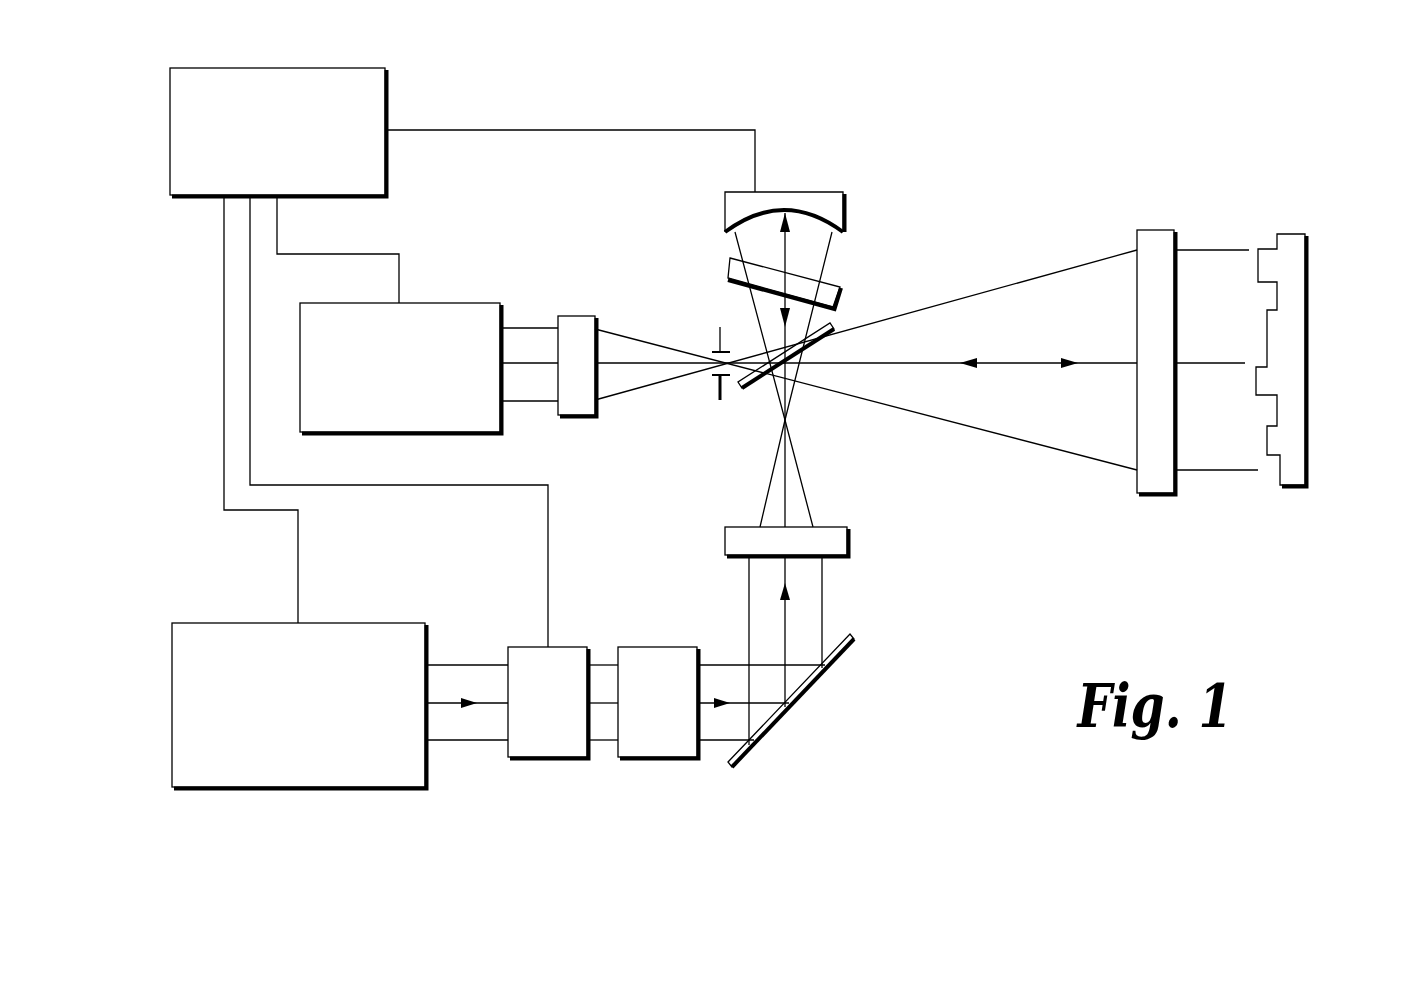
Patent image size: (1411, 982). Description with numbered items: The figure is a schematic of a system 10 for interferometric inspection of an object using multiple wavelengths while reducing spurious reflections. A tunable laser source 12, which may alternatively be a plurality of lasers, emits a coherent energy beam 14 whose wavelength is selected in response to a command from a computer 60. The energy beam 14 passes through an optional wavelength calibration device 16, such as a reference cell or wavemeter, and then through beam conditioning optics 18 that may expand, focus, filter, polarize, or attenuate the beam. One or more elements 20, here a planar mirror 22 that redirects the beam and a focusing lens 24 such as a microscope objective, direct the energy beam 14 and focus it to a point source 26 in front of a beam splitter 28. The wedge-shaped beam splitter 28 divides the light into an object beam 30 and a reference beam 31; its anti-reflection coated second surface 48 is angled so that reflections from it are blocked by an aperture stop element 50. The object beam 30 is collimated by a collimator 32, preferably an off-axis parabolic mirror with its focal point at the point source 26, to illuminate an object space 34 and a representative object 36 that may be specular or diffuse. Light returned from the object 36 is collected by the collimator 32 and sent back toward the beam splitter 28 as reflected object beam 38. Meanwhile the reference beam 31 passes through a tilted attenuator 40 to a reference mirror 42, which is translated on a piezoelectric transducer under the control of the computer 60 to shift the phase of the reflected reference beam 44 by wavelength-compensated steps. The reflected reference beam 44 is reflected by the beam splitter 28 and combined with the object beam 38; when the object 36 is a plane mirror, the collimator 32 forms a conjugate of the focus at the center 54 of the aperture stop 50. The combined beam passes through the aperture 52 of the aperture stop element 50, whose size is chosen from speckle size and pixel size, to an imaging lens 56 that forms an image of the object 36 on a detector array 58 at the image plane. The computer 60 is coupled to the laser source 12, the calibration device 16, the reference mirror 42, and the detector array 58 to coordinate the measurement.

The system for interferometric inspection of an object 10 is at (777, 62).
The tunable laser source 12 is at (335, 790).
The energy beam 14 is at (458, 762).
The wavelength calibration device 16 is at (551, 760).
The beam conditioning optics 18 is at (660, 760).
The beam directing and focusing elements 20 is at (880, 523).
The planar mirror 22 is at (777, 720).
The focusing lens 24 is at (725, 540).
The point source 26 is at (806, 420).
The beam splitter 28 is at (745, 387).
The object beam 30 is at (1048, 339).
The reference beam 31 is at (812, 236).
The collimator 32 is at (1151, 496).
The object space 34 is at (1222, 218).
The object 36 is at (1306, 269).
The reflected object beam 38 is at (966, 338).
The attenuator 40 is at (836, 305).
The reference mirror 42 is at (810, 192).
The reflected reference beam 44 is at (778, 300).
The second surface 48 is at (831, 327).
The aperture stop element 50 is at (719, 398).
The aperture 52 is at (690, 381).
The center of aperture stop 54 is at (716, 352).
The imaging lens 56 is at (567, 417).
The detector array 58 is at (435, 303).
The computer 60 is at (263, 68).